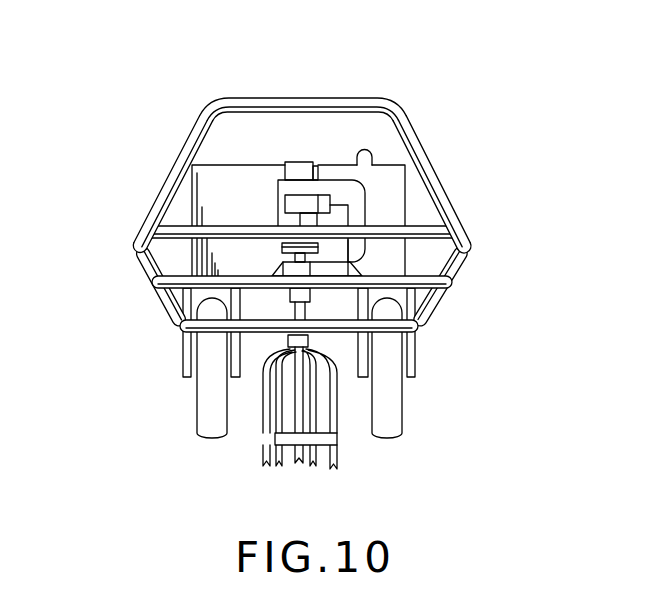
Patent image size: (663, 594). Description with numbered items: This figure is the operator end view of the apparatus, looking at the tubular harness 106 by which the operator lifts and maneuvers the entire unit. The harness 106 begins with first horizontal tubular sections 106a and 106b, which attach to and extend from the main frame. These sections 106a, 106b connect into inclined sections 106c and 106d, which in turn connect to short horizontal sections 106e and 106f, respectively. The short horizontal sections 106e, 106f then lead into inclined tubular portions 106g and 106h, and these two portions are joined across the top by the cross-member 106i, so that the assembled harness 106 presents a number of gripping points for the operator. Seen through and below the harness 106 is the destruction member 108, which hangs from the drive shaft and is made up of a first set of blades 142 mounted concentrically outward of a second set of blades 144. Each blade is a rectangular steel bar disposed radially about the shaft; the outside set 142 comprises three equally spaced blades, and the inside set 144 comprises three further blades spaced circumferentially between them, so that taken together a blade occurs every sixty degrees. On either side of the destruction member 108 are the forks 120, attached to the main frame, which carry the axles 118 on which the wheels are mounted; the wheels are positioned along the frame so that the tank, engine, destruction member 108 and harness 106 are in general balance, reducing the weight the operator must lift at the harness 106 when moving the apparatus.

The harness 106 is at (303, 97).
The first horizontal tubular section 106a is at (183, 330).
The first horizontal tubular section 106b is at (420, 333).
The inclined section 106c is at (153, 277).
The inclined section 106d is at (460, 265).
The short horizontal section 106e is at (137, 242).
The short horizontal section 106f is at (463, 238).
The inclined tubular portion 106g is at (183, 155).
The inclined tubular portion 106h is at (415, 152).
The cross-member 106i is at (258, 98).
The destruction member 108 is at (315, 435).
The axle 118 is at (195, 377).
The fork 120 is at (183, 363).
The first set of blades 142 is at (263, 452).
The second set of blades 144 is at (298, 455).